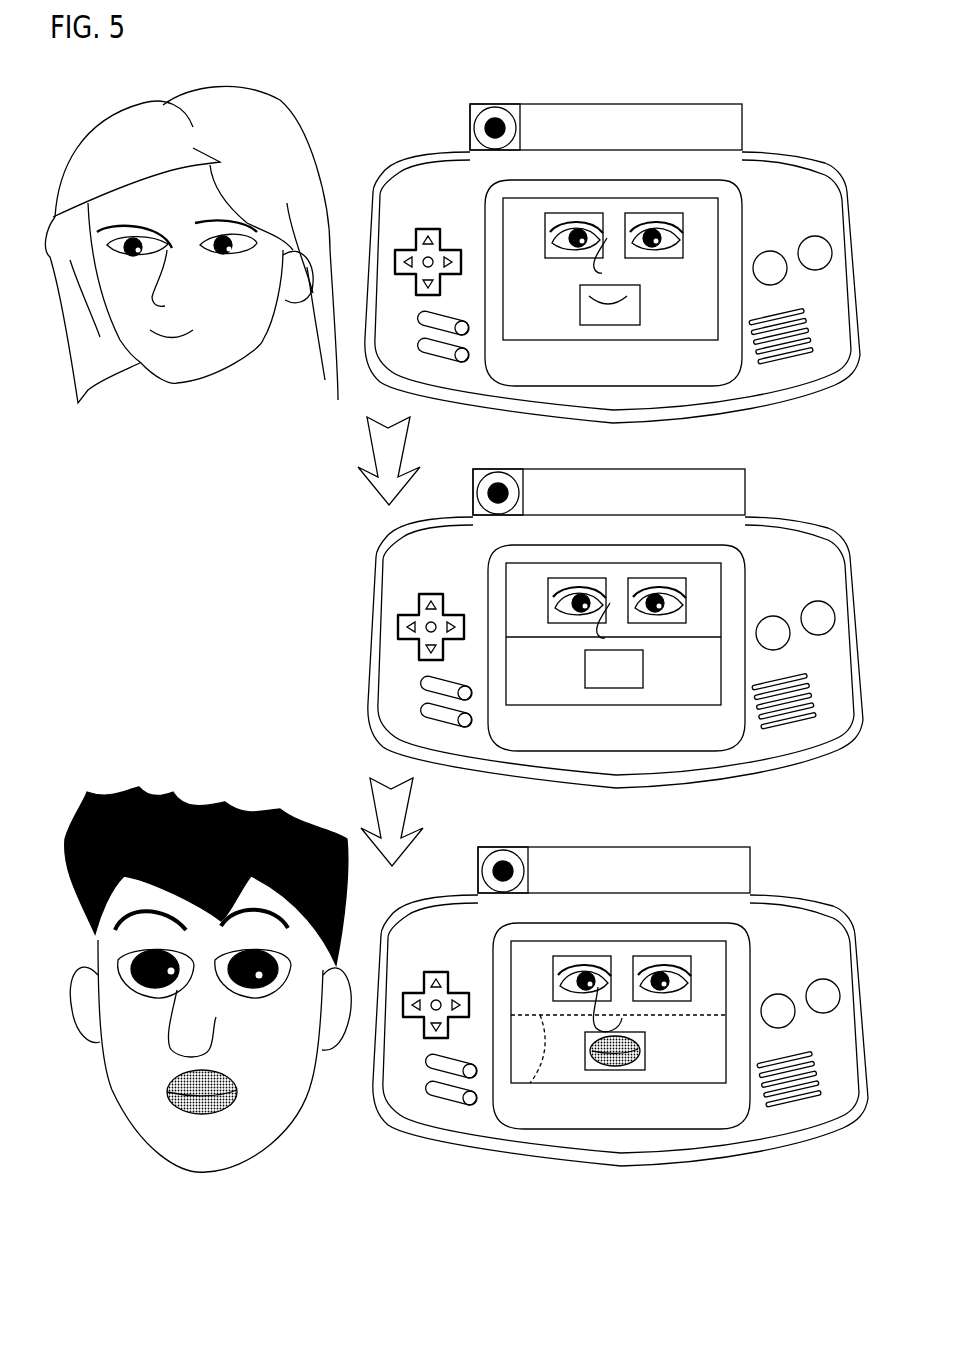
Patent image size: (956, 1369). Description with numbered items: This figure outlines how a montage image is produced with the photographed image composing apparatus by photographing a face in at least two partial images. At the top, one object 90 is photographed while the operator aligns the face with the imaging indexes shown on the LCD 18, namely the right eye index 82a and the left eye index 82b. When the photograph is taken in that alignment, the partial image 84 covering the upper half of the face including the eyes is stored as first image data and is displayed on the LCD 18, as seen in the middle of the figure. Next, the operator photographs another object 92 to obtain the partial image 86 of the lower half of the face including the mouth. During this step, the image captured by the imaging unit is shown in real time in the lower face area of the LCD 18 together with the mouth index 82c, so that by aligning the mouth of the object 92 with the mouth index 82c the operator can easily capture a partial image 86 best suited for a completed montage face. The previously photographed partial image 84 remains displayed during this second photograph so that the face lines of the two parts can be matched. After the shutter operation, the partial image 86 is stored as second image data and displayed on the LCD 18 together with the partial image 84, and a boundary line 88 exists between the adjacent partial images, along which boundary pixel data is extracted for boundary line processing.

The LCD 18 is at (507, 582).
The right eye index 82a is at (545, 236).
The left eye index 82b is at (690, 222).
The mouth index 82c is at (618, 688).
The partial image 84 is at (708, 582).
The partial image 86 is at (688, 1063).
The boundary line 88 is at (530, 1083).
The object 90 is at (117, 138).
The object 92 is at (191, 804).